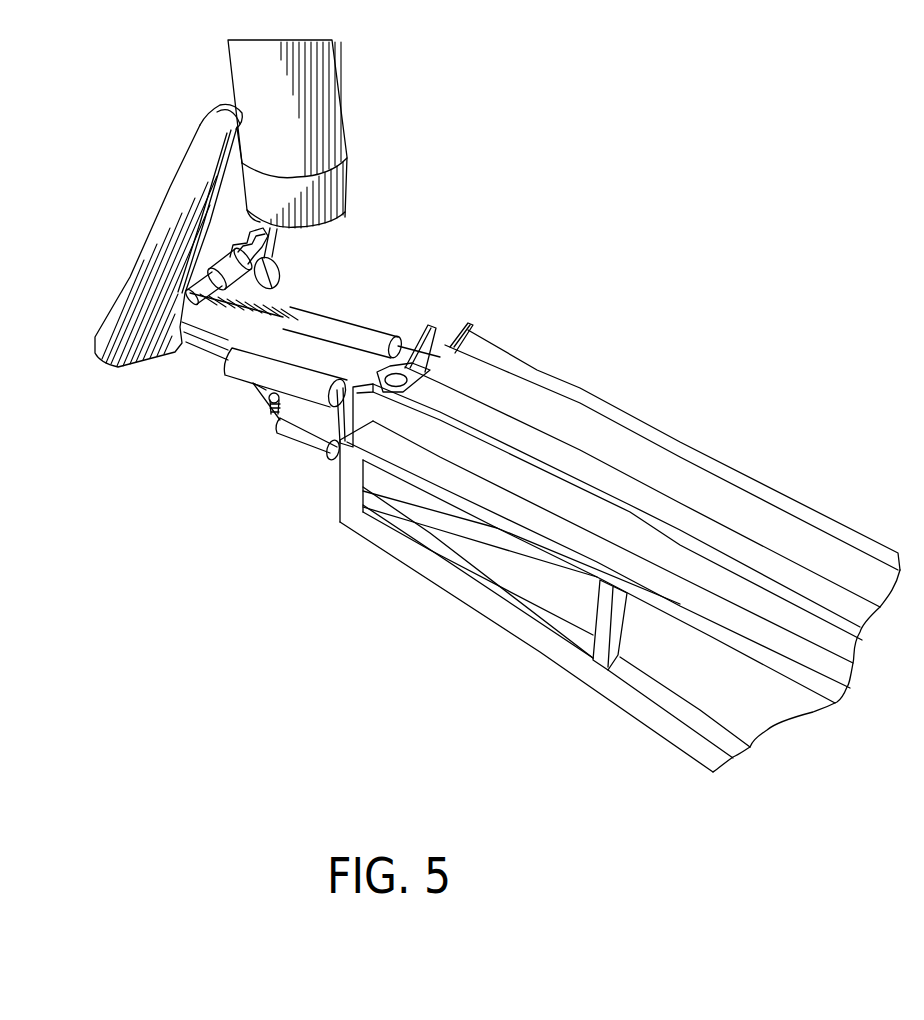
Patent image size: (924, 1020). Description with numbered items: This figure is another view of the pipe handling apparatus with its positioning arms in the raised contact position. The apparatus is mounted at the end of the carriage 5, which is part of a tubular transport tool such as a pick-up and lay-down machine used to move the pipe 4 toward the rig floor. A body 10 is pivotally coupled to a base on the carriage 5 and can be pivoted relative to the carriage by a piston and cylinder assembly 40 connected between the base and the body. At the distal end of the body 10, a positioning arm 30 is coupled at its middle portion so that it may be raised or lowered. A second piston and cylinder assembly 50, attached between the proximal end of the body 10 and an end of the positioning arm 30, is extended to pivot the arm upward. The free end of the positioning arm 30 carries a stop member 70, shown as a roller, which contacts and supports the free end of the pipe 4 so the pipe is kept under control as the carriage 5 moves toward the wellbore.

The pipe 4 is at (343, 91).
The carriage 5 is at (680, 441).
The body 10 is at (268, 322).
The positioning arm 30 is at (133, 268).
The piston and cylinder assembly 40 is at (303, 437).
The piston and cylinder assembly 50 is at (231, 378).
The stop member 70 is at (212, 113).